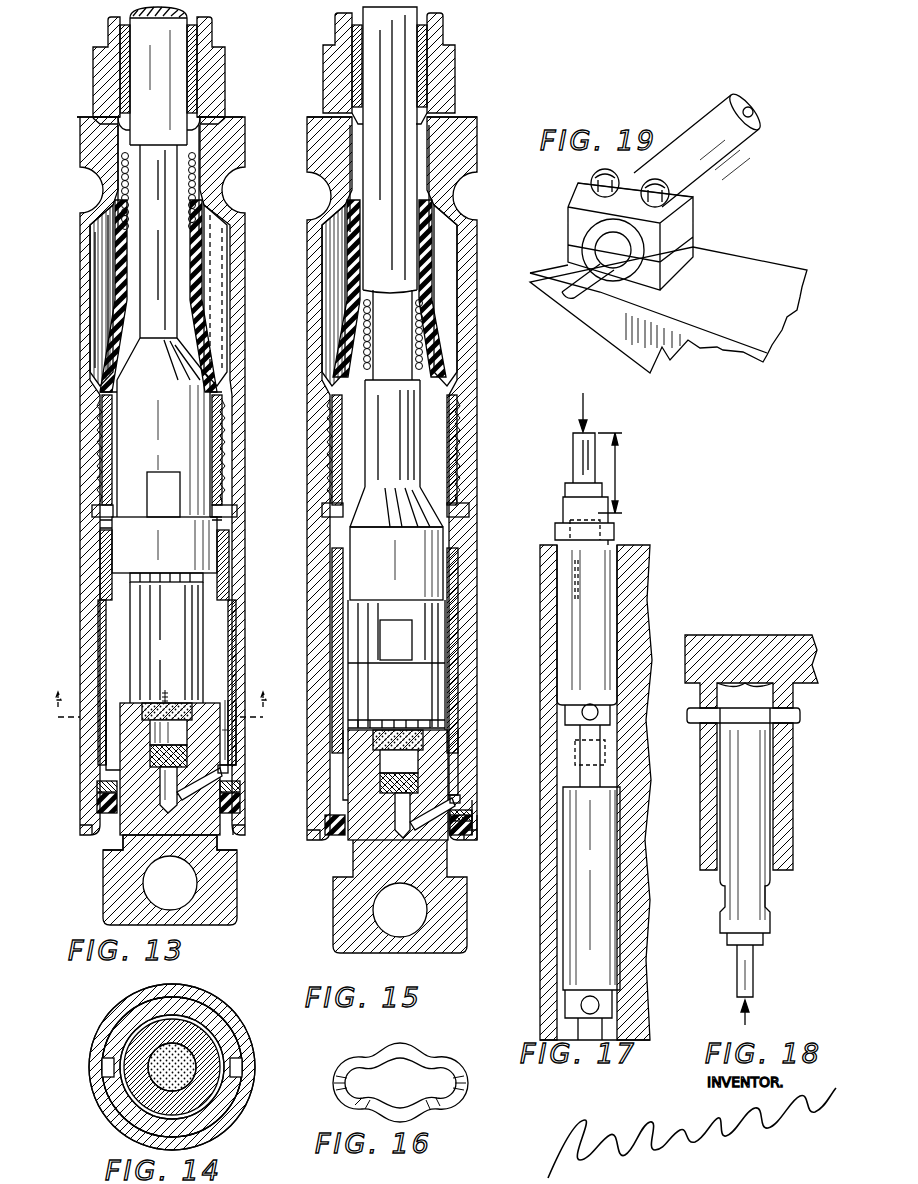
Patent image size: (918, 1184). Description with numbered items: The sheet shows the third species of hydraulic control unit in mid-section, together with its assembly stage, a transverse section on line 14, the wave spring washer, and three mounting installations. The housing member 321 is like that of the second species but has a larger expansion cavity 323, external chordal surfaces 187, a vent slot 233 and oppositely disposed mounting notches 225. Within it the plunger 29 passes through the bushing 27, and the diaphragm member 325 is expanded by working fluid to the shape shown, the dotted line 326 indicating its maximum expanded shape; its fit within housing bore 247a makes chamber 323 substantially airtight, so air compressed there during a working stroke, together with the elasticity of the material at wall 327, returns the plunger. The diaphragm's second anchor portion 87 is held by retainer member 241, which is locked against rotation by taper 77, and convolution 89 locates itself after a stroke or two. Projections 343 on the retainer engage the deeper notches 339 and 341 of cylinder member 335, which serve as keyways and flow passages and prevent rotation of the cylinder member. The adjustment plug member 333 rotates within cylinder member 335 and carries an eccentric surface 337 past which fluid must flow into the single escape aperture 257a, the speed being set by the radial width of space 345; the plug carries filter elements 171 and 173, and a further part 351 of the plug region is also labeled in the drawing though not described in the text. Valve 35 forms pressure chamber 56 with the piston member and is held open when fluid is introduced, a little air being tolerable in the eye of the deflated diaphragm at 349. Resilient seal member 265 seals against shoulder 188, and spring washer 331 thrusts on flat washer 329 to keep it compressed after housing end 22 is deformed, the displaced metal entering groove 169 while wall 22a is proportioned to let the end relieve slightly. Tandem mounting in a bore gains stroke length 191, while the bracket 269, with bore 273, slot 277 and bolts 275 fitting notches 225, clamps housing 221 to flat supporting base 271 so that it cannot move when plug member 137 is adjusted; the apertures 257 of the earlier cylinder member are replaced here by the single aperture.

In FIG. 13, the housing member 321 is at (93, 43).
In FIG. 13, the external chordal surfaces 187 is at (93, 85).
In FIG. 13, the vent slot 233 is at (95, 118).
In FIG. 13, the mounting notches 225 is at (97, 195).
In FIG. 15, the mounting notches 225 is at (322, 212).
In FIG. 13, the expansion cavity 323 is at (102, 260).
In FIG. 15, the expansion cavity 323 is at (452, 310).
In FIG. 13, the wall 327 is at (100, 292).
In FIG. 13, the second anchor portion 87 is at (101, 423).
In FIG. 13, the tapered wall surface 77 is at (100, 450).
In FIG. 13, the retainer member 241 is at (100, 478).
In FIG. 13, the projections 343 is at (100, 510).
In FIG. 15, the projections 343 is at (469, 510).
In FIG. 13, the notch 339 is at (105, 527).
In FIG. 13, the cylinder member 335 is at (105, 552).
In FIG. 13, the valve member 35 is at (148, 584).
In FIG. 13, the pressure chamber 56 is at (140, 628).
In FIG. 13, the section line 14— 14 is at (162, 694).
In FIG. 13, the escape aperture 257a is at (112, 717).
In FIG. 13, the eccentric surface 337 is at (130, 742).
In FIG. 14, the eccentric surface 337 is at (135, 1050).
In FIG. 13, the filter element 173 is at (105, 785).
In FIG. 13, the resilient seal member 265 is at (105, 805).
In FIG. 15, the resilient seal member 265 is at (325, 828).
In FIG. 13, the housing end 22 is at (118, 840).
In FIG. 13, the groove 169 is at (123, 842).
In FIG. 13, the adjustment plug member 333 is at (100, 913).
In FIG. 14, the adjustment plug member 333 is at (200, 1027).
In FIG. 13, the plunger 29 is at (172, 68).
In FIG. 19, the plunger 29 is at (566, 262).
In FIG. 13, the bushing 27 is at (197, 87).
In FIG. 13, the inner convolution 89 is at (195, 115).
In FIG. 13, the housing bore 247a is at (199, 153).
In FIG. 13, the diaphragm member 325 is at (222, 288).
In FIG. 13, the dotted line 326 is at (226, 318).
In FIG. 13, the notch 341 is at (225, 527).
In FIG. 13, the filter element 171 is at (178, 700).
In FIG. 13, the pin 351 is at (222, 733).
In FIG. 13, the spring washer 331 is at (243, 785).
In FIG. 15, the spring washer 331 is at (462, 802).
In FIG. 16, the spring washer 331 is at (450, 1099).
In FIG. 13, the flat washer 329 is at (243, 788).
In FIG. 15, the flat washer 329 is at (470, 818).
In FIG. 15, the eye of the deflated diaphragm member 349 is at (345, 200).
In FIG. 15, the shoulder 188 is at (478, 838).
In FIG. 15, the wall 22a is at (330, 858).
In FIG. 14, the space 345 is at (125, 1088).
In FIG. 14, the apertures 257 is at (110, 1068).
In FIG. 17, the length of stroke 191 is at (617, 480).
In FIG. 19, the housing member 221 is at (678, 128).
In FIG. 19, the plug member 137 is at (752, 126).
In FIG. 19, the mounting bolts 275 is at (598, 183).
In FIG. 19, the bore 273 is at (575, 200).
In FIG. 19, the bracket 269 is at (697, 217).
In FIG. 19, the axially extending slot 277 is at (697, 233).
In FIG. 19, the flat supporting base 271 is at (740, 268).